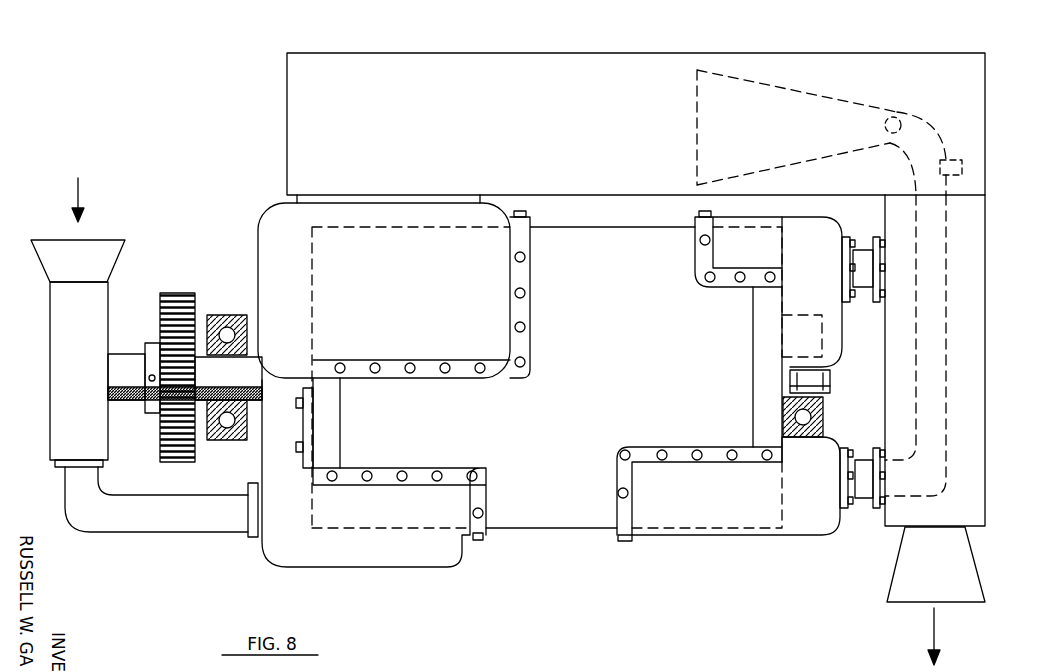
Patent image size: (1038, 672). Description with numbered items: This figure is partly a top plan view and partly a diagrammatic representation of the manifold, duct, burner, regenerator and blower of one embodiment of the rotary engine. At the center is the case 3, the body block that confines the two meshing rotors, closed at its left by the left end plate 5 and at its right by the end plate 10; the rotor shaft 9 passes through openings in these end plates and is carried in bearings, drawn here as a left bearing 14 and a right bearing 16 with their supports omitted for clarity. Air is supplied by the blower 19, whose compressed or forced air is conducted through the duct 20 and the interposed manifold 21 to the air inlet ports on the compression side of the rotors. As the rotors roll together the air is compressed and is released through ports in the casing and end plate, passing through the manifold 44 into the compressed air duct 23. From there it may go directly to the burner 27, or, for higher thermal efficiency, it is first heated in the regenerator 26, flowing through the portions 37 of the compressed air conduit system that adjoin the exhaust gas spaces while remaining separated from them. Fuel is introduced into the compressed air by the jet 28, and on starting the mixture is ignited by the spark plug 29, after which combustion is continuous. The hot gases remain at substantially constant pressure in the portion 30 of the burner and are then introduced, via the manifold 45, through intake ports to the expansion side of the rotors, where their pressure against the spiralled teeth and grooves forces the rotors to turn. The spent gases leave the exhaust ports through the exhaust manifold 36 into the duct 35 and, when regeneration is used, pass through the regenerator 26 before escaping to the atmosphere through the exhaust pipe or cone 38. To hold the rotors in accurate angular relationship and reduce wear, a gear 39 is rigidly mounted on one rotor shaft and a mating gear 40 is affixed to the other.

The case 3 is at (525, 520).
The left end plate 5 is at (328, 445).
The shaft 9 is at (250, 368).
The end plate 10 is at (762, 358).
The bearing 14 is at (215, 312).
The bearing 16 is at (823, 408).
The blower 19 is at (60, 358).
The duct 20 is at (164, 520).
The manifold 21 is at (352, 550).
The compressed air duct 23 is at (865, 492).
The regenerator 26 is at (970, 370).
The burner 27 is at (752, 93).
The jet 28 is at (962, 162).
The spark plug 29 is at (897, 115).
The portion of the burner 30 is at (463, 73).
The duct 35 is at (865, 290).
The exhaust manifold 36 is at (812, 268).
The portions of the compressed air conduit system 37 is at (950, 330).
The exhaust pipe or cone 38 is at (960, 565).
The gear 39 is at (160, 308).
The mating gear 40 is at (160, 420).
The manifold 44 is at (648, 517).
The manifold 45 is at (283, 228).